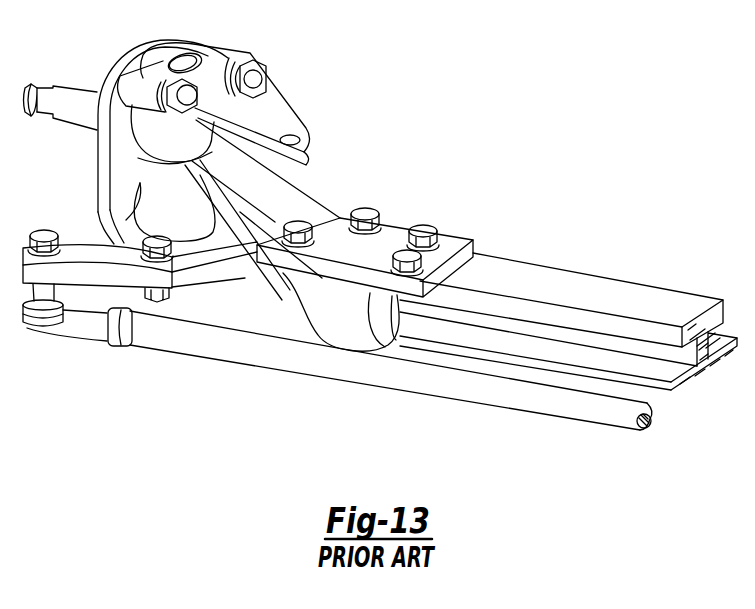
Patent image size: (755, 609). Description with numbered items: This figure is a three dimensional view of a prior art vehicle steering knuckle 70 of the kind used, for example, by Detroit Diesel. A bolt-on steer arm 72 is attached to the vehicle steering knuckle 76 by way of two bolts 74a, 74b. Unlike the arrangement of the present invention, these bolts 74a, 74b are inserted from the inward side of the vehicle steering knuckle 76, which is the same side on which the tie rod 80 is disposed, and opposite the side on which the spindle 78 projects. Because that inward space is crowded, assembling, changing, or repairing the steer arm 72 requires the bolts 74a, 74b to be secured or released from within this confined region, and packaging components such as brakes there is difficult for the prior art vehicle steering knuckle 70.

The prior art vehicle steering knuckle 70 is at (489, 92).
The bolt-on steer arm 72 is at (305, 134).
The bolt 74a is at (187, 105).
The bolt 74b is at (266, 82).
The vehicle steering knuckle 76 is at (140, 183).
The spindle 78 is at (53, 88).
The tie rod 80 is at (118, 273).